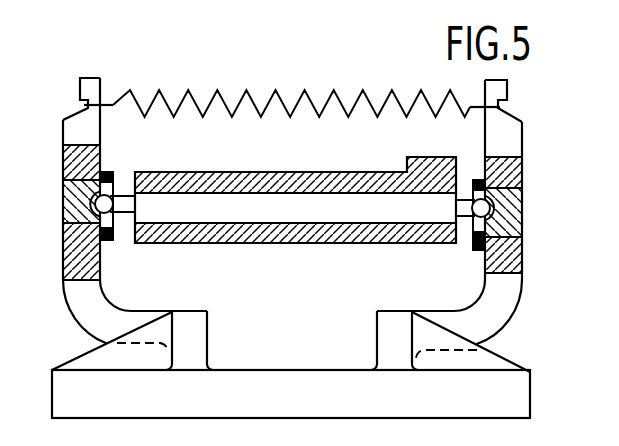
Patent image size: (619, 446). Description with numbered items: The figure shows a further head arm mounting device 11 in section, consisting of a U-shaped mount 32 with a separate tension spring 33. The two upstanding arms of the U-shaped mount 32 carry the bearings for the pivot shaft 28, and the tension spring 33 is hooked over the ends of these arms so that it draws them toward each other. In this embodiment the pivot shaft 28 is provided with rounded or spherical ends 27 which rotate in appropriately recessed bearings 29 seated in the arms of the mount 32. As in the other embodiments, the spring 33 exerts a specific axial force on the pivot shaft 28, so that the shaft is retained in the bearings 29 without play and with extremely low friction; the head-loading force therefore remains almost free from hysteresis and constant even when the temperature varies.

The head arm mounting device 11 is at (318, 62).
The rounded or spherical ends 27 is at (104, 207).
The pivot shaft 28 is at (243, 212).
The recessed bearings 29 is at (510, 209).
The U-shaped mount 32 is at (82, 133).
The tension spring 33 is at (206, 95).